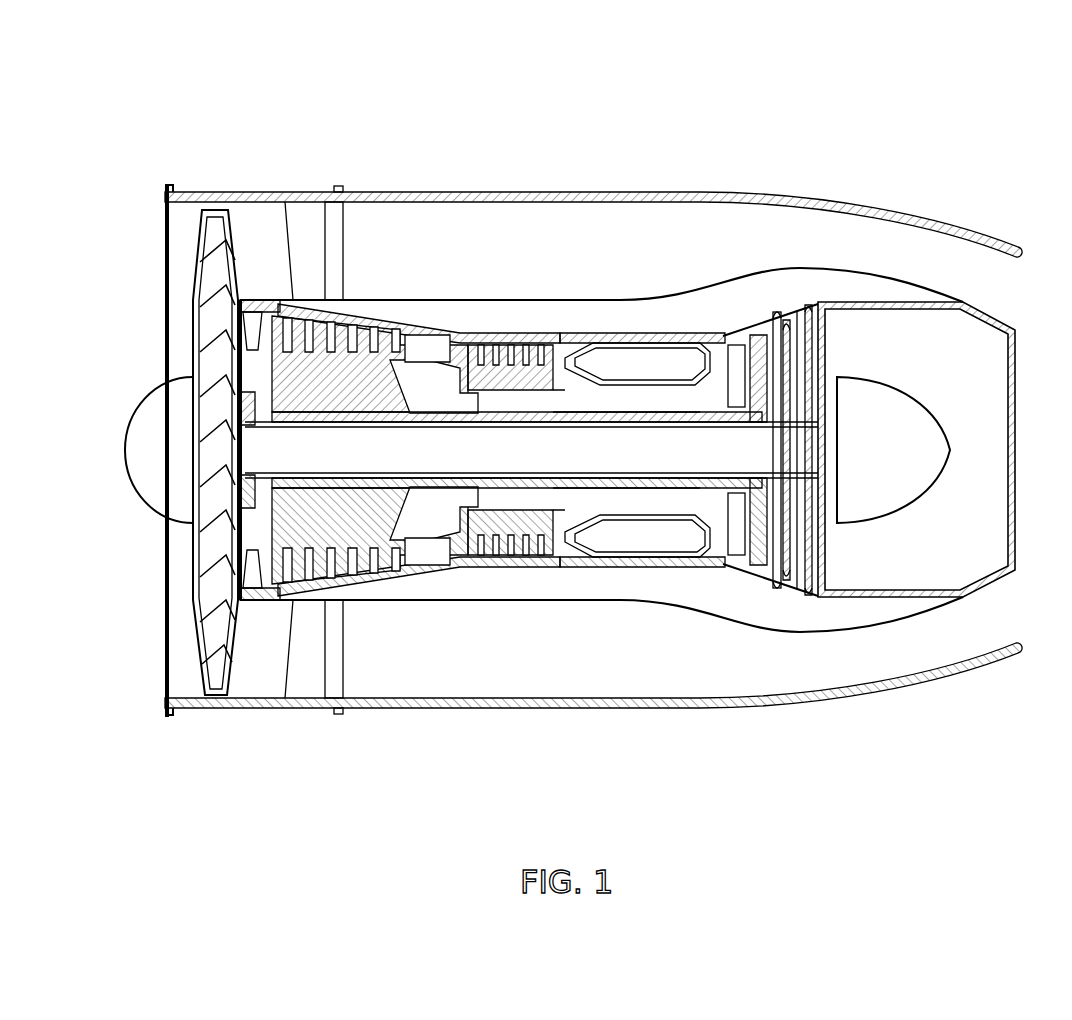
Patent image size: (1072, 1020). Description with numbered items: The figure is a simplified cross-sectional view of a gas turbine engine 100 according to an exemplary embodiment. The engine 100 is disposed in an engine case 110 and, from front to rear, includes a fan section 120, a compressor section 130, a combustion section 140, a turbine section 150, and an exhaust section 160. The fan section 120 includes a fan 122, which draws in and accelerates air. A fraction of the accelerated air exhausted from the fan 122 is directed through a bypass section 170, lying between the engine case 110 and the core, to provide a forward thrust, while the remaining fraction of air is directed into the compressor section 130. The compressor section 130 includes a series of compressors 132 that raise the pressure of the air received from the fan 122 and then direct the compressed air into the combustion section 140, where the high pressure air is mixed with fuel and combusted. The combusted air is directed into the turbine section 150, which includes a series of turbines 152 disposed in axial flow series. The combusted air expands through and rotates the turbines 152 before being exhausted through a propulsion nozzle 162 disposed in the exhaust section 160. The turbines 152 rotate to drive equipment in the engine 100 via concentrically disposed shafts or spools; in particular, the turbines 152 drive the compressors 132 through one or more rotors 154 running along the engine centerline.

The gas turbine engine 100 is at (567, 433).
The engine case 110 is at (593, 409).
The fan section 120 is at (227, 497).
The fan 122 is at (201, 297).
The compressor section 130 is at (529, 555).
The compressors 132 is at (358, 404).
The combustion section 140 is at (710, 745).
The turbine section 150 is at (775, 557).
The turbines 152 is at (838, 602).
The rotors 154 is at (446, 430).
The exhaust section 160 is at (627, 498).
The propulsion nozzle 162 is at (622, 409).
The bypass section 170 is at (560, 195).